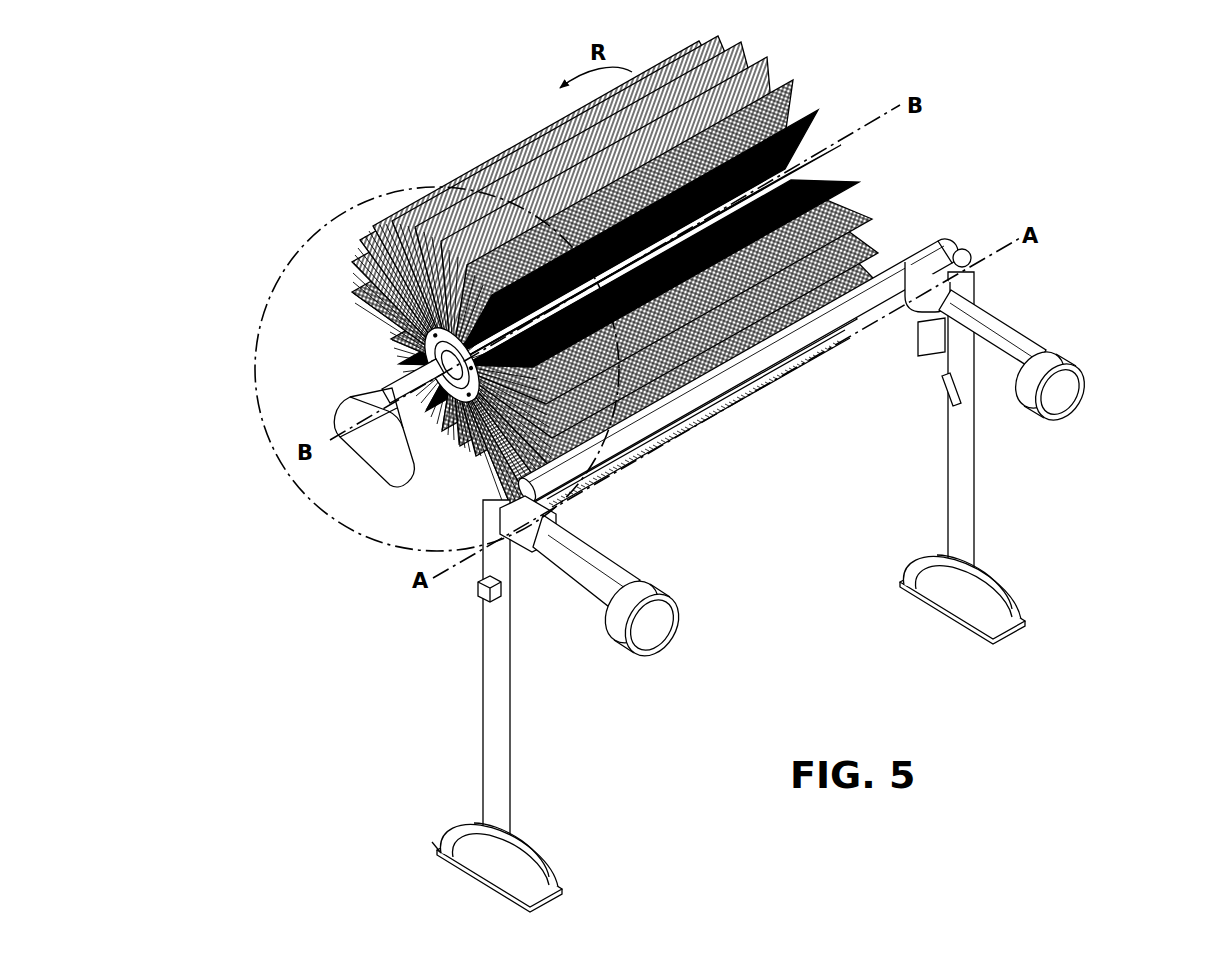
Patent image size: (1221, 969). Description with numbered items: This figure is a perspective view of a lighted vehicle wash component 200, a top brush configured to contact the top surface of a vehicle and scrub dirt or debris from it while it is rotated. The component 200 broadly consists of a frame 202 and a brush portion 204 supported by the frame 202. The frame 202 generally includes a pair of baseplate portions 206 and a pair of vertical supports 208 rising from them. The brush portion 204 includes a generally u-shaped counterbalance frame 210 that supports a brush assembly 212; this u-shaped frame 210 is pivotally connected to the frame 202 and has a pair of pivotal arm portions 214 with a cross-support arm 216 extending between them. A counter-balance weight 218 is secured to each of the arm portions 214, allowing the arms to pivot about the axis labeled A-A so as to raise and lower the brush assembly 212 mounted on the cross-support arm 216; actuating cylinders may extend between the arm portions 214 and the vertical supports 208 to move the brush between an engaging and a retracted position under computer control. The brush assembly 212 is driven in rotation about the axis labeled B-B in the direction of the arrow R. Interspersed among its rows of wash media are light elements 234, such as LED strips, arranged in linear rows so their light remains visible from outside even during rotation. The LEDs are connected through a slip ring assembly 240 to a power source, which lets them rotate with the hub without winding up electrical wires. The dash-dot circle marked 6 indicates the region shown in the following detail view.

The vehicle wash component 200 is at (717, 474).
The frame 202 is at (803, 541).
The brush portion 204 is at (624, 272).
The baseplate portions 206 is at (546, 885).
The vertical supports 208 is at (500, 715).
The u-shaped counterbalance frame 210 is at (917, 245).
The brush assembly 212 is at (520, 120).
The pivotal arm portions 214 is at (597, 574).
The cross-support arm 216 is at (744, 366).
The counter-balance weight 218 is at (656, 622).
The light elements 234 is at (804, 164).
The slip ring assembly 240 is at (352, 440).
The section view circle 6 is at (262, 294).